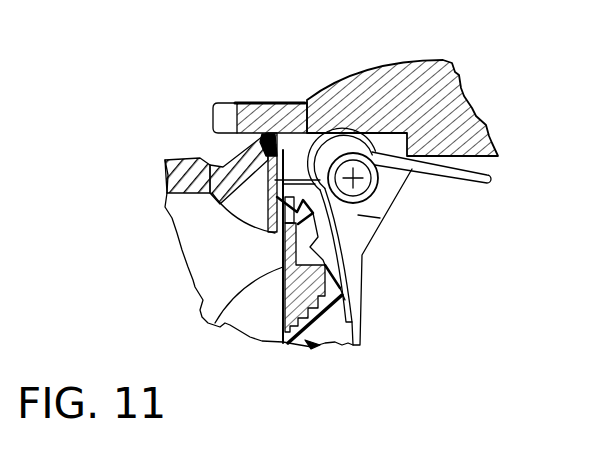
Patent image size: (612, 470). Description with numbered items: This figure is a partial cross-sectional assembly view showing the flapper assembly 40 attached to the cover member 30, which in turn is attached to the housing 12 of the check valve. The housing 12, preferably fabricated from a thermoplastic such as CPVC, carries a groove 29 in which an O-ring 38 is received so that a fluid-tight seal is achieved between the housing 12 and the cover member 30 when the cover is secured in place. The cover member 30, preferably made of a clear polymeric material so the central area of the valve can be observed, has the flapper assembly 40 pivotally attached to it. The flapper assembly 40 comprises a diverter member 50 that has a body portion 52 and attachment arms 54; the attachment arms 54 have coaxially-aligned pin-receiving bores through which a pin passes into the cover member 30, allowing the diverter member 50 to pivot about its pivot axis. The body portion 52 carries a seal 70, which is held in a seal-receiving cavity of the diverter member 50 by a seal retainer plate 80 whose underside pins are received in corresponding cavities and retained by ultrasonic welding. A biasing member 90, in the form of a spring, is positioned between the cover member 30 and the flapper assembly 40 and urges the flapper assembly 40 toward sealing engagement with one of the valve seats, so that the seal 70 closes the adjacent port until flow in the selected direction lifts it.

The housing 12 is at (166, 171).
The groove 29 is at (266, 158).
The cover member 30 is at (392, 78).
The O-ring 38 is at (268, 147).
The flapper assembly 40 is at (323, 360).
The diverter member 50 is at (373, 333).
The body portion 52 is at (353, 283).
The attachment arms 54 is at (355, 235).
The seal 70 is at (282, 247).
The seal retainer plate 80 is at (303, 306).
The biasing member 90 is at (493, 177).